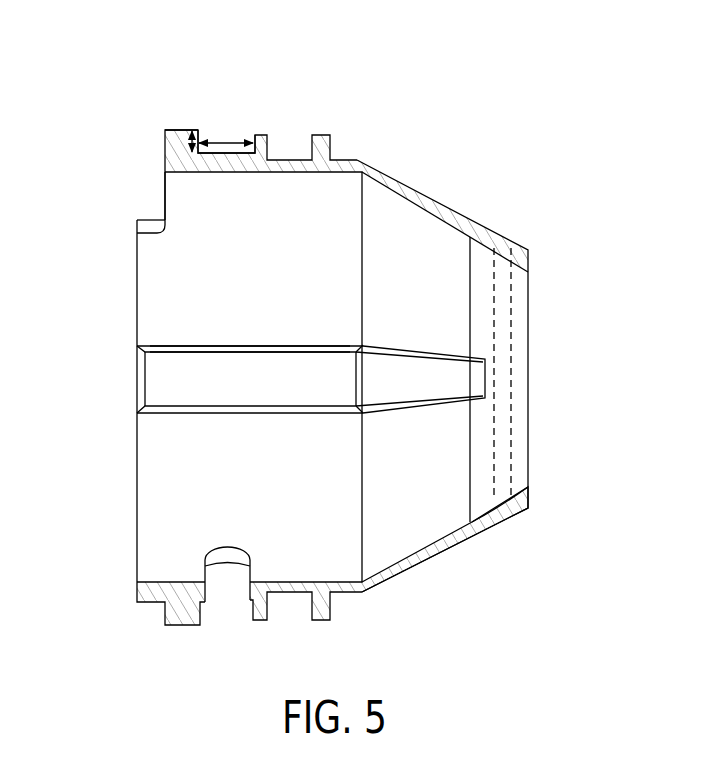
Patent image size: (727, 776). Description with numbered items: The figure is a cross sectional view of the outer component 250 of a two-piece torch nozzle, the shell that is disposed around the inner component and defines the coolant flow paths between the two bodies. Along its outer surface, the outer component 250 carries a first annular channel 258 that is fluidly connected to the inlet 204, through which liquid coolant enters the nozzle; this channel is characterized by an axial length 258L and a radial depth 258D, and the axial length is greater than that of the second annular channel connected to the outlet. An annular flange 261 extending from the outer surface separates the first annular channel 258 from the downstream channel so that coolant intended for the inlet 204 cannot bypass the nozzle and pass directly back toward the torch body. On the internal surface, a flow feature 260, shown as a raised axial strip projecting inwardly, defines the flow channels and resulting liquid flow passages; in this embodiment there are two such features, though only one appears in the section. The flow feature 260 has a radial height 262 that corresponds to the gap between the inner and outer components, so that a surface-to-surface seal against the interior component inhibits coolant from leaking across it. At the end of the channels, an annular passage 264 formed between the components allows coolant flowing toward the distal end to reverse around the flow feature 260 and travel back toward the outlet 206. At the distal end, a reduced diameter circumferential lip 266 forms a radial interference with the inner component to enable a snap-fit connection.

The inlet 204 is at (342, 347).
The outlet 206 is at (232, 587).
The outer component 250 is at (461, 173).
The first annular channel 258 is at (233, 126).
The radial depth 258D is at (197, 138).
The axial length 258L is at (225, 146).
The flow feature 260 is at (158, 375).
The annular flange 261 is at (176, 129).
The radial height 262 is at (192, 377).
The annular passage 264 is at (495, 363).
The circumferential lip 266 is at (528, 502).